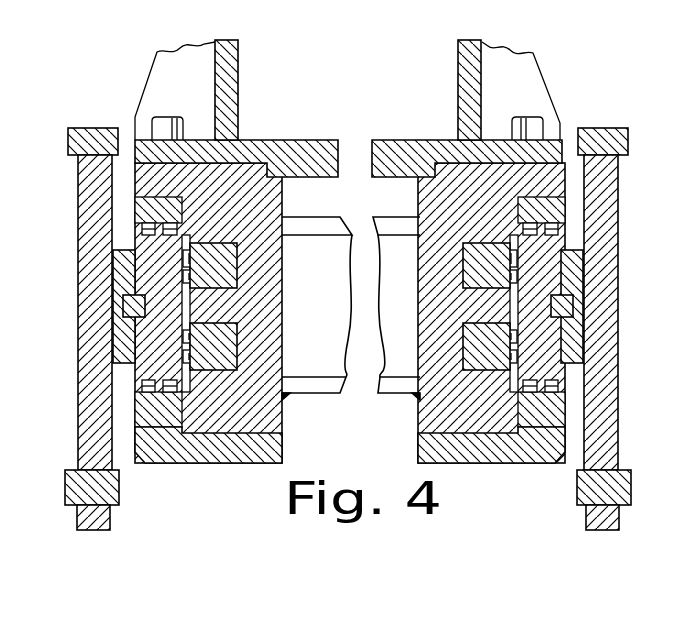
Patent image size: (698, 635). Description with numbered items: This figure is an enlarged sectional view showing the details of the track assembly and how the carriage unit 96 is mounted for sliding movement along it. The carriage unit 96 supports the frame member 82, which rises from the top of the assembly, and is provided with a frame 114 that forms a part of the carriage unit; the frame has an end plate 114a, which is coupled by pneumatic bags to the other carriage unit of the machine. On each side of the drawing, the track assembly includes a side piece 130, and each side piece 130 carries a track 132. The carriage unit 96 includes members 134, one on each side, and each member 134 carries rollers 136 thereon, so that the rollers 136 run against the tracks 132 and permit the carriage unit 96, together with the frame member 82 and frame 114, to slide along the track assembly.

The frame member 82 is at (460, 50).
The carriage unit 96 is at (330, 140).
The frame 114 is at (326, 217).
The end plate 114a is at (332, 362).
The side piece 130 is at (98, 262).
The track 132 is at (153, 342).
The member 134 is at (265, 262).
The roller 136 is at (170, 222).